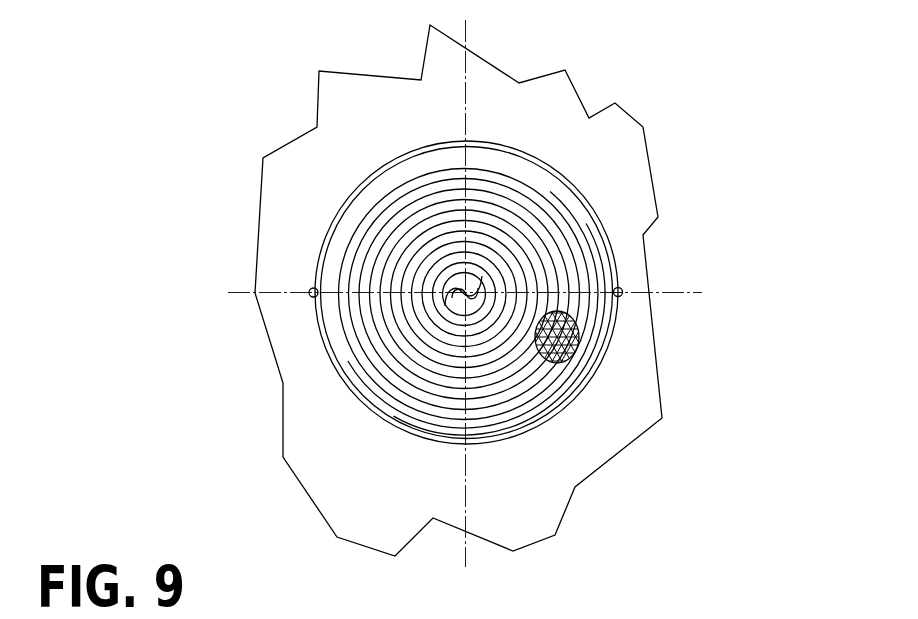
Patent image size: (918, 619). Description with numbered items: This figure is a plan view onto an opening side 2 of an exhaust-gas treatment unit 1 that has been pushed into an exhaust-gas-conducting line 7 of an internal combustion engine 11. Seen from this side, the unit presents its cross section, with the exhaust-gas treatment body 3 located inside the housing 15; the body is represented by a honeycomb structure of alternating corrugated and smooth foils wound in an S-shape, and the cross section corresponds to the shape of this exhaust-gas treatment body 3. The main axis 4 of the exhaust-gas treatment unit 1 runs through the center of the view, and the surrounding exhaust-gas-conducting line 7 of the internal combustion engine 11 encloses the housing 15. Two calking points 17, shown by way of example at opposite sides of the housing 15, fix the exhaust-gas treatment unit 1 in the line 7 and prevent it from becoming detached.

The exhaust-gas treatment unit 1 is at (356, 121).
The opening side 2 is at (588, 247).
The exhaust-gas treatment body 3 is at (350, 353).
The main axis 4 is at (237, 293).
The exhaust-gas-conducting line 7 is at (470, 141).
The internal combustion engine 11 is at (634, 101).
The housing 15 is at (342, 212).
The calking points 17 is at (310, 297).